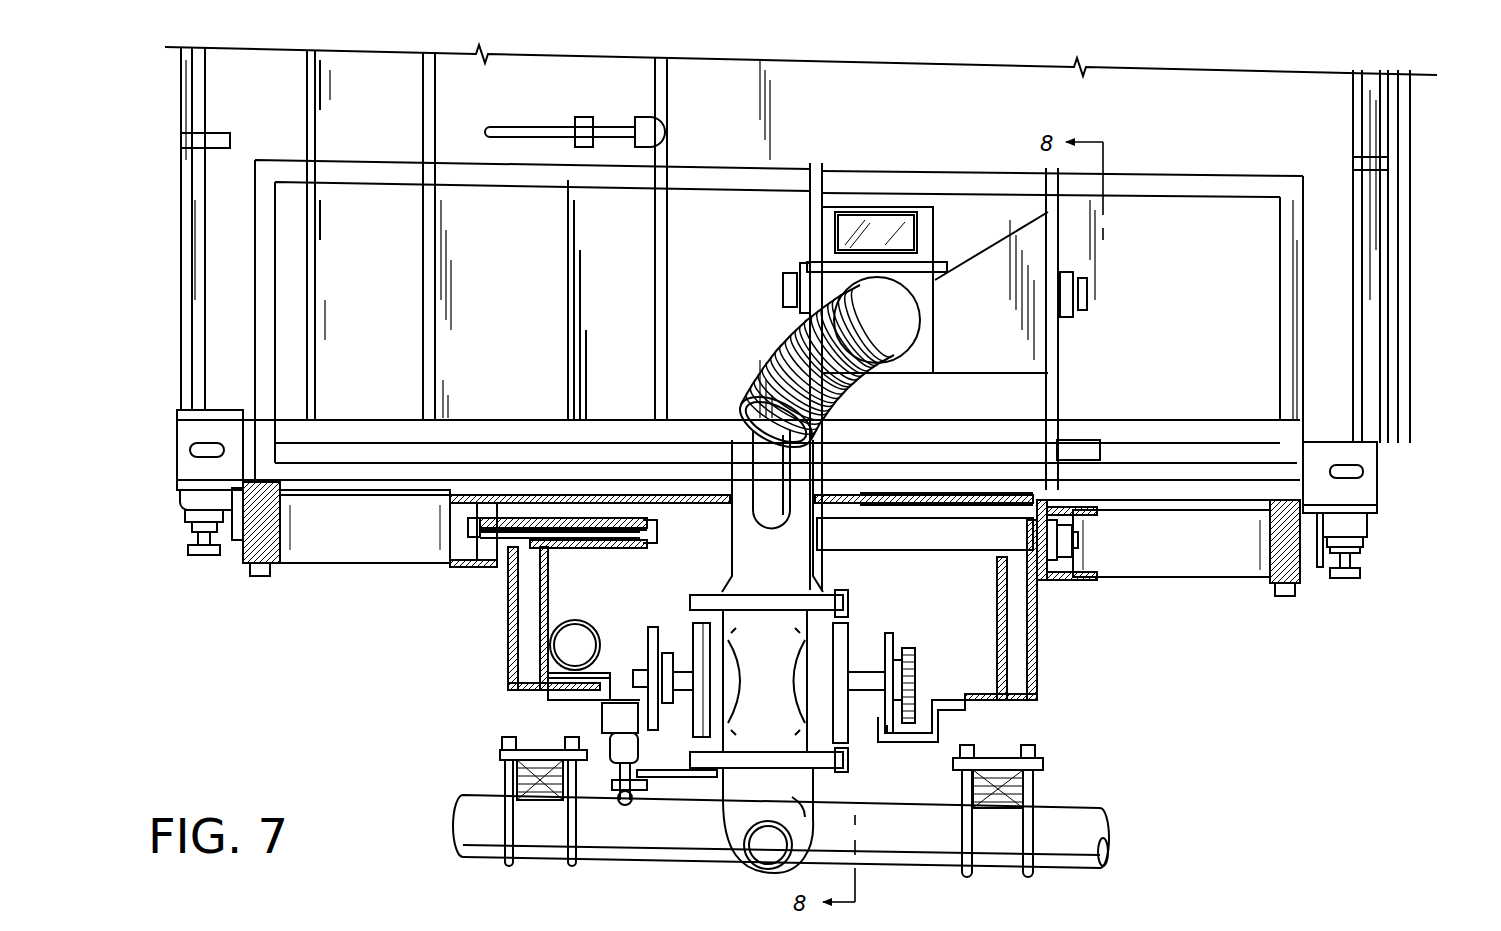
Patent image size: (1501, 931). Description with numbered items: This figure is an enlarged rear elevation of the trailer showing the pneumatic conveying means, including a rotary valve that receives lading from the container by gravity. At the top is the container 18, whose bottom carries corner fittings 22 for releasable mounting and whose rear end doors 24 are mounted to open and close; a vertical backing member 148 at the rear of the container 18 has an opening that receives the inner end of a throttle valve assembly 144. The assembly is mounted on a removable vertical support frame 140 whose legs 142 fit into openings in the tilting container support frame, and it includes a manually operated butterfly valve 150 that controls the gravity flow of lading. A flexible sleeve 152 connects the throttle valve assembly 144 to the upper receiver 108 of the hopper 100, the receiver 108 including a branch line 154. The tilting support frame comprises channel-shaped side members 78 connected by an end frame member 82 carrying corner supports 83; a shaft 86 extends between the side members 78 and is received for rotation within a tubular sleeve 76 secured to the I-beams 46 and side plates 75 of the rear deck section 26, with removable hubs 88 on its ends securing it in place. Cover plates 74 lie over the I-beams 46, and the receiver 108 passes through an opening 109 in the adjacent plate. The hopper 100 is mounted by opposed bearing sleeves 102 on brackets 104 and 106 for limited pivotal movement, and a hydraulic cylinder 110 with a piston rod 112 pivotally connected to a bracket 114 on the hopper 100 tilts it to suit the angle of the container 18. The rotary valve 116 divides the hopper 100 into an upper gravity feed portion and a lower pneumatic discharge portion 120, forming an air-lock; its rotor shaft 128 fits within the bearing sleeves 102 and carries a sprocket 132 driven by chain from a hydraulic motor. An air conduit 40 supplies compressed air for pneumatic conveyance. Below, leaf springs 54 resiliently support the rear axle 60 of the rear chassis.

The container 18 is at (175, 198).
The corner fittings 22 is at (192, 467).
The rear end doors 24 is at (278, 93).
The rear deck section 26 is at (1002, 490).
The air conduit 40 is at (576, 617).
The I-beams 46 is at (540, 655).
The leaf springs 54 is at (512, 780).
The rear axle 60 is at (472, 823).
The cover plates 74 is at (525, 495).
The side plates 75 is at (508, 640).
The tubular sleeve 76 is at (592, 518).
The channel-shaped members 78 is at (485, 570).
The end frame member 82 is at (348, 562).
The corner supports 83 is at (200, 505).
The shaft 86 is at (627, 525).
The removable hubs 88 is at (493, 500).
The hopper 100 is at (850, 782).
The bearing sleeves 102 is at (693, 690).
The bracket 104 is at (897, 635).
The bracket 106 is at (648, 680).
The upper receiver 108 is at (790, 562).
The opening 109 is at (752, 445).
The hydraulic cylinder 110 is at (600, 718).
The piston rod 112 is at (600, 777).
The bracket 114 is at (673, 773).
The rotary valve 116 is at (790, 660).
The lower pneumatic discharge portion 120 is at (737, 837).
The shaft 128 is at (912, 665).
The sprocket 132 is at (915, 715).
The support frame 140 is at (830, 160).
The legs 142 is at (262, 345).
The throttle valve assembly 144 is at (933, 225).
The vertical backing member 148 is at (1290, 125).
The butterfly valve 150 is at (808, 270).
The flexible sleeve 152 is at (820, 345).
The branch line 154 is at (762, 418).